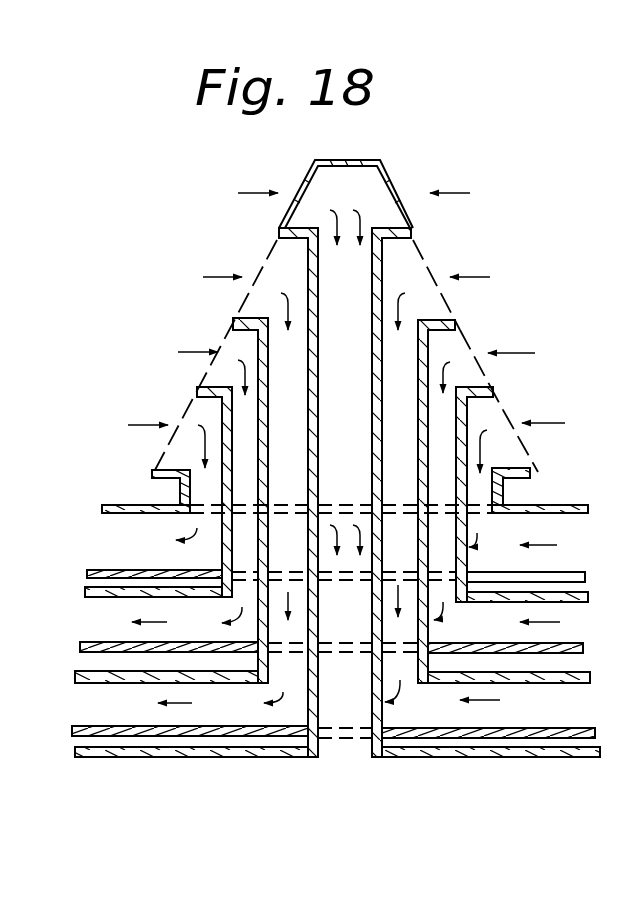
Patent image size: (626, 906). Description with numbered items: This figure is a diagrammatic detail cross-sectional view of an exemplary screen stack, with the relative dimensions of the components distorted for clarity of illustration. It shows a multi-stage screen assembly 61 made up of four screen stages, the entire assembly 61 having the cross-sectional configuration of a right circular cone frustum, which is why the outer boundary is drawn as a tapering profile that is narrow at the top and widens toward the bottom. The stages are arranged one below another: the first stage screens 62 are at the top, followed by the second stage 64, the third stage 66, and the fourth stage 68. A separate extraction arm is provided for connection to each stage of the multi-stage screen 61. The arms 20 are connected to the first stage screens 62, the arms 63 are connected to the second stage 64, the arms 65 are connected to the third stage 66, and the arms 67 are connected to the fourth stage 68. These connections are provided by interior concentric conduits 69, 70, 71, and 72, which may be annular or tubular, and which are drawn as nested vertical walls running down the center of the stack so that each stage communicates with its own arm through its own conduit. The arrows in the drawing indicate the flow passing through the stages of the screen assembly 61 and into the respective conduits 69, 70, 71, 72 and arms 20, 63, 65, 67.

The arm 20 is at (105, 532).
The multi-stage screen assembly 61 is at (143, 364).
The first stage screen 62 is at (507, 414).
The arm 63 is at (107, 601).
The second stage 64 is at (470, 339).
The arm 65 is at (102, 681).
The third stage 66 is at (421, 262).
The arm 67 is at (107, 756).
The fourth stage 68 is at (389, 180).
The interior concentric conduit 69 is at (341, 506).
The interior concentric conduit 70 is at (248, 467).
The interior concentric conduit 71 is at (268, 463).
The interior concentric conduit 72 is at (318, 462).